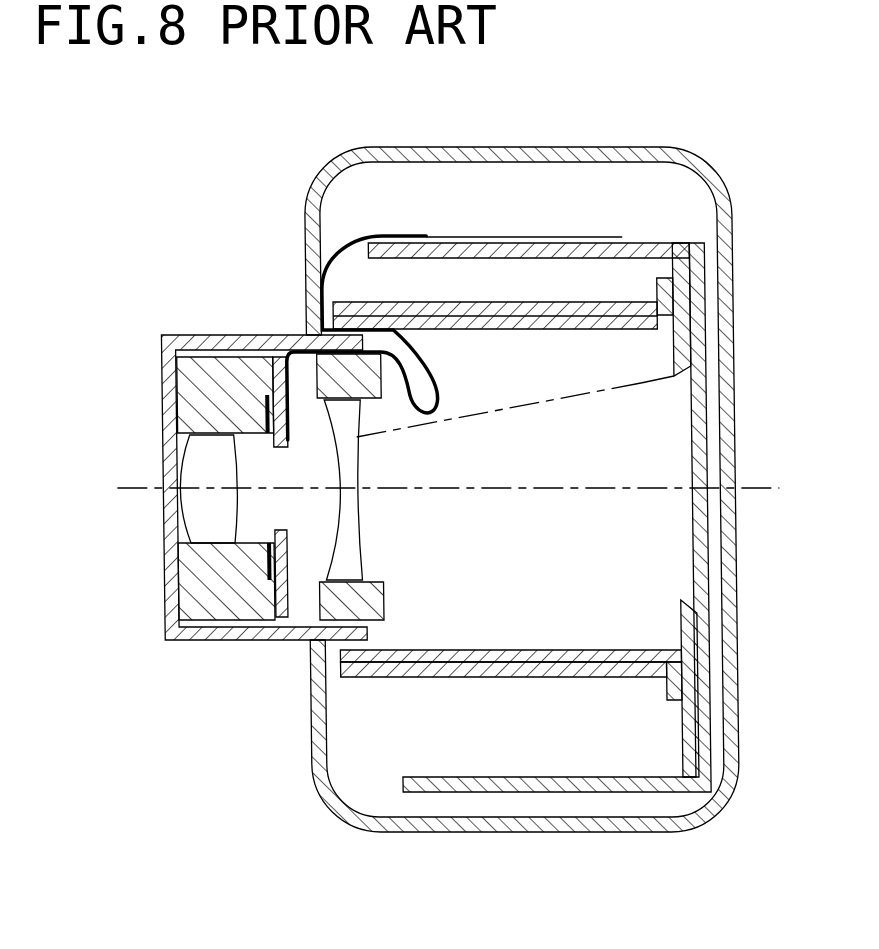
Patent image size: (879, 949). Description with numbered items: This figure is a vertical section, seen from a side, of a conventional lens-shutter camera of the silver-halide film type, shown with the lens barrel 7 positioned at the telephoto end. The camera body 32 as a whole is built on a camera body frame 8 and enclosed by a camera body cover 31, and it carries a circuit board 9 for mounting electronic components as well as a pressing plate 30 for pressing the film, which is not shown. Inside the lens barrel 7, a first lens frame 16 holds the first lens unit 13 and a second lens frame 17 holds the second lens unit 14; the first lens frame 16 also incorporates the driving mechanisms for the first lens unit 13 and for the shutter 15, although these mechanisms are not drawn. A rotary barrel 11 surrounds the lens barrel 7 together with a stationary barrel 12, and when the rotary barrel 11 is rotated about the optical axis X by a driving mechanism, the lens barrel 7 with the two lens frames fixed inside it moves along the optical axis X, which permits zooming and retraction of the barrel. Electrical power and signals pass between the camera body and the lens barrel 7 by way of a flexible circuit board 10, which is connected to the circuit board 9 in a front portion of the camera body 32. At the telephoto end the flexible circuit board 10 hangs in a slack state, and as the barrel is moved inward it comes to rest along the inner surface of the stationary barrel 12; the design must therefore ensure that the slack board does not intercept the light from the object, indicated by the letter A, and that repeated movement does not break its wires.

The lens barrel 7 is at (205, 335).
The camera body frame 8 is at (665, 243).
The circuit board 9 is at (503, 241).
The flexible circuit board 10 is at (394, 235).
The rotary barrel 11 is at (587, 302).
The stationary barrel 12 is at (605, 648).
The first lens unit 13 is at (212, 512).
The second lens unit 14 is at (348, 530).
The shutter 15 is at (264, 546).
The first lens frame 16 is at (233, 592).
The second lens frame 17 is at (368, 603).
The pressing plate 30 is at (707, 407).
The camera body cover 31 is at (540, 832).
The camera body 32 is at (578, 544).
The light from the object A is at (575, 398).
The optical axis X is at (760, 490).